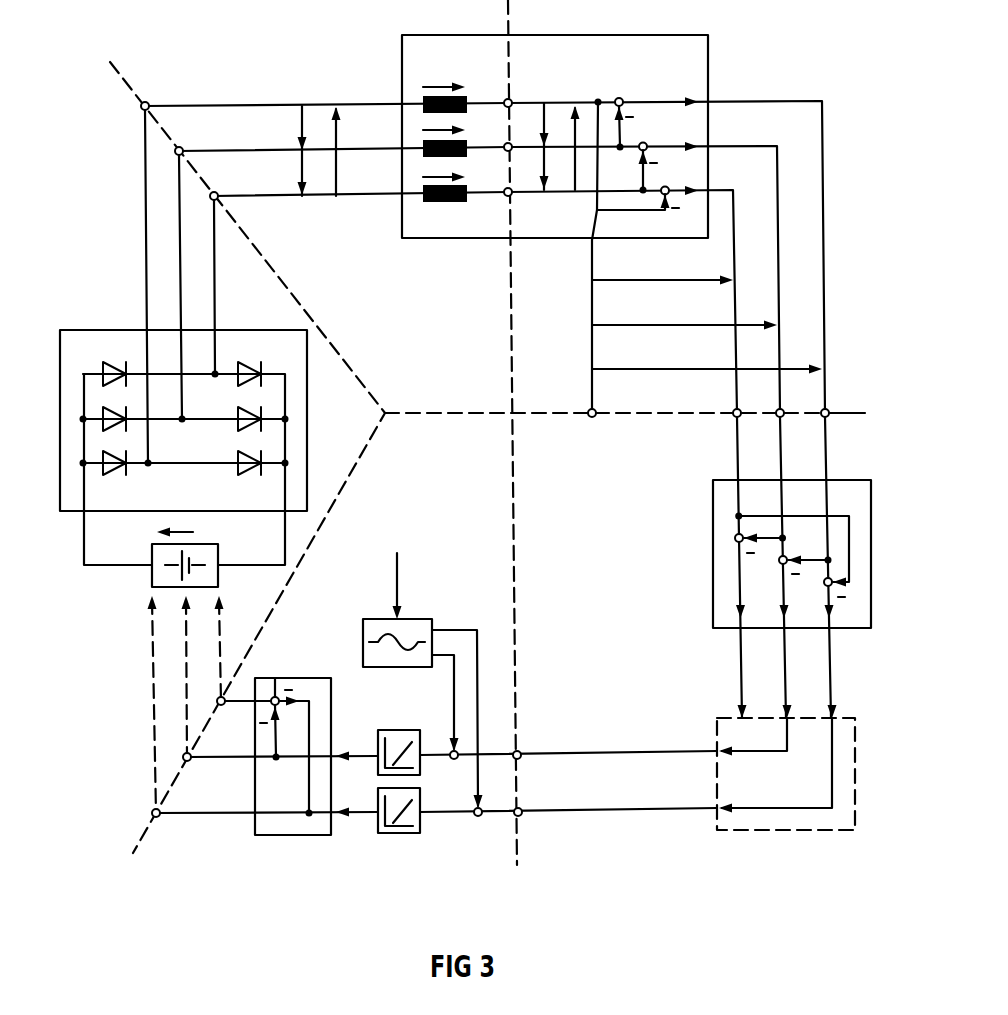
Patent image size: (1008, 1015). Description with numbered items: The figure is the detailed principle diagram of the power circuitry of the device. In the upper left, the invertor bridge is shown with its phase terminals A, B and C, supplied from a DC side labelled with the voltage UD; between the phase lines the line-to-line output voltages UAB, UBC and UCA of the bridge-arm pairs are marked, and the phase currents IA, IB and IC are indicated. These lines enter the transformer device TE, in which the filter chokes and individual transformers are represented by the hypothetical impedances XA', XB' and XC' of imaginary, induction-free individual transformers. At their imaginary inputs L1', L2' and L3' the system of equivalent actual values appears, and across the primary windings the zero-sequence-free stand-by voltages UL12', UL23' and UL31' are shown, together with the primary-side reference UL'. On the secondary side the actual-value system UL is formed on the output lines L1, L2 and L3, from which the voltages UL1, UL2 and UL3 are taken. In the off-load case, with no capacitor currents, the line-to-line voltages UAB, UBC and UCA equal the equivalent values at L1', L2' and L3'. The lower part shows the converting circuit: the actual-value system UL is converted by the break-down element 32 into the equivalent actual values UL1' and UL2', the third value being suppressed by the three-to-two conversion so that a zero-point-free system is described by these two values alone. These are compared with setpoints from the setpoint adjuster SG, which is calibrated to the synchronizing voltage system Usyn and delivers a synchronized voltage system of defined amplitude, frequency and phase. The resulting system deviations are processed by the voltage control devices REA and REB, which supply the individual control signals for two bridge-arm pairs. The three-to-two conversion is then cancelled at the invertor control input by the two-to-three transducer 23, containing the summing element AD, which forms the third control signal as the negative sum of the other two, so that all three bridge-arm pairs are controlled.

The phase A terminal A is at (157, 84).
The phase B terminal B is at (189, 130).
The phase C terminal C is at (223, 176).
The line-to-line output voltage UAB is at (302, 126).
The line-to-line output voltage UBC is at (302, 171).
The line-to-line output voltage UCA is at (336, 133).
The transformer device TE is at (555, 122).
The hypothetical impedance XA' is at (461, 85).
The hypothetical impedance XB' is at (410, 116).
The hypothetical impedance XC' is at (445, 208).
The phase A current IA is at (452, 80).
The phase B current IB is at (447, 130).
The phase C current IC is at (447, 177).
The imaginary input L1' is at (520, 90).
The imaginary input L2' is at (492, 187).
The imaginary input L3' is at (525, 208).
The stand-by voltage UL12' is at (570, 95).
The stand-by voltage UL23' is at (579, 131).
The stand-by voltage UL31' is at (578, 169).
The secondary line voltage reference UL' is at (493, 432).
The actual-value system UL is at (571, 258).
The line voltage L1 UL1 is at (707, 359).
The line voltage L2 UL2 is at (684, 315).
The line voltage L3 UL3 is at (631, 280).
The mains line L1 is at (809, 553).
The mains line L2 is at (765, 553).
The mains line L3 is at (721, 553).
The break-down element 32 is at (785, 831).
The equivalent actual value UL2' is at (541, 741).
The equivalent actual value UL1' is at (541, 798).
The setpoint adjuster SG is at (388, 619).
The synchronizing voltage system Usyn is at (394, 572).
The voltage control device REB is at (418, 730).
The voltage control device REA is at (388, 833).
The 2/3 transducer 23 is at (287, 835).
The adder AD is at (275, 678).
The DC voltage UD is at (186, 554).